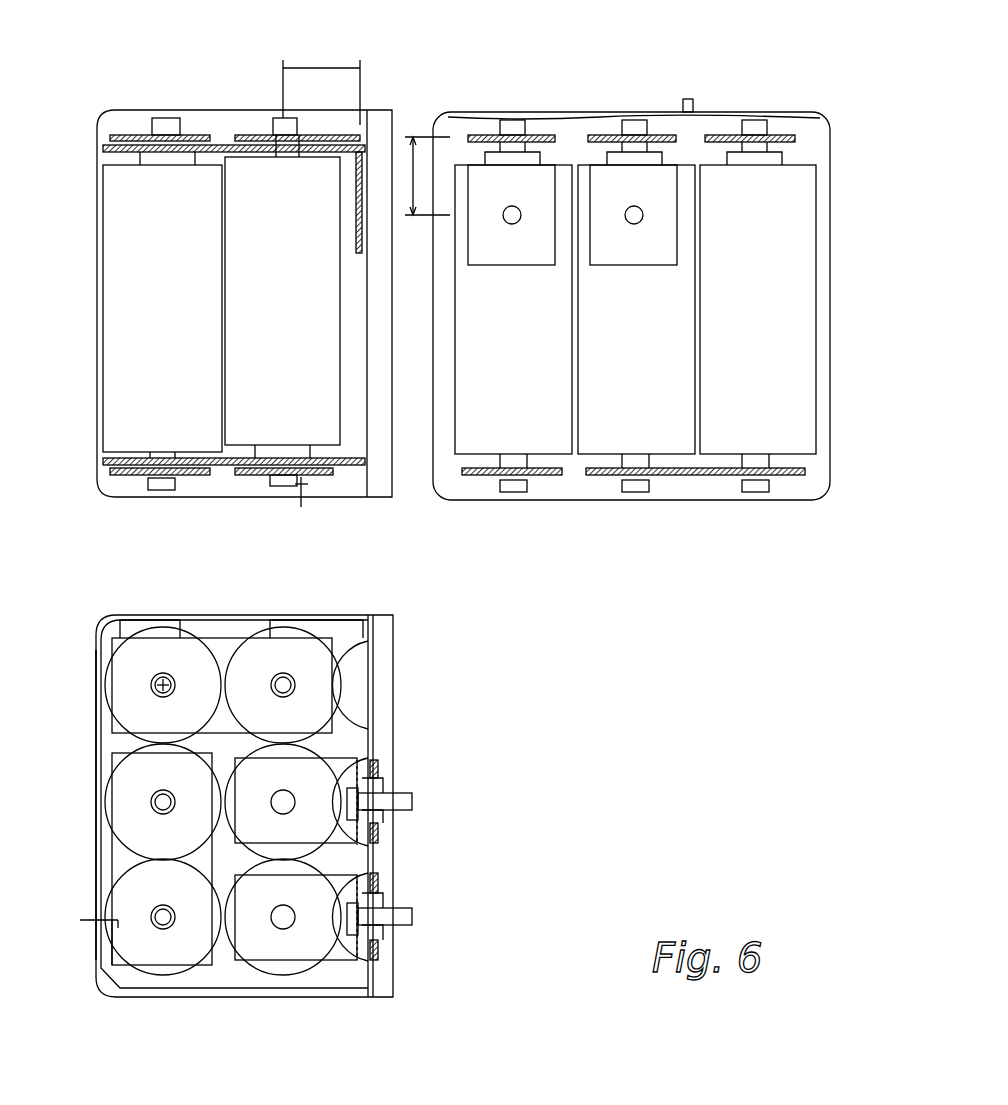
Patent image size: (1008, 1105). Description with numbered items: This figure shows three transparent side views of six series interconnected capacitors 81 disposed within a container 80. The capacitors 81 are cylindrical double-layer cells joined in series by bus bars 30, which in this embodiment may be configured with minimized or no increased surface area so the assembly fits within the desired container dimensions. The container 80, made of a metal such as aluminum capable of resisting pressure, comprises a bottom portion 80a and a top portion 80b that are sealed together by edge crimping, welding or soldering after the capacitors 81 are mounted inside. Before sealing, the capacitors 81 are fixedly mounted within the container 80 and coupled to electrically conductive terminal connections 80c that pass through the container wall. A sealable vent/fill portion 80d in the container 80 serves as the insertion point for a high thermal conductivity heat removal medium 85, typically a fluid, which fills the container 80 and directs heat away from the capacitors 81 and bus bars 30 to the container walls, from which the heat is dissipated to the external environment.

The bus bar 30 is at (226, 640).
The container 80 is at (93, 296).
The bottom portion 80a is at (97, 752).
The top portion 80b is at (395, 665).
The terminal connection 80c is at (413, 800).
The vent/fill portion 80d is at (689, 99).
The capacitor 81 is at (459, 305).
The heat removal medium 85 is at (551, 117).